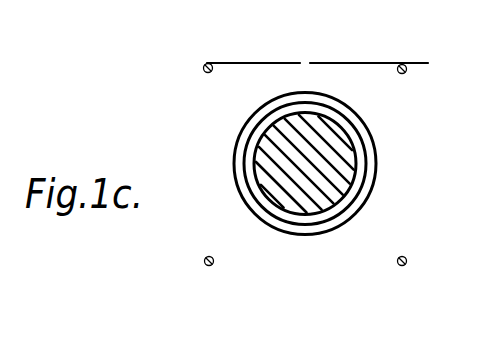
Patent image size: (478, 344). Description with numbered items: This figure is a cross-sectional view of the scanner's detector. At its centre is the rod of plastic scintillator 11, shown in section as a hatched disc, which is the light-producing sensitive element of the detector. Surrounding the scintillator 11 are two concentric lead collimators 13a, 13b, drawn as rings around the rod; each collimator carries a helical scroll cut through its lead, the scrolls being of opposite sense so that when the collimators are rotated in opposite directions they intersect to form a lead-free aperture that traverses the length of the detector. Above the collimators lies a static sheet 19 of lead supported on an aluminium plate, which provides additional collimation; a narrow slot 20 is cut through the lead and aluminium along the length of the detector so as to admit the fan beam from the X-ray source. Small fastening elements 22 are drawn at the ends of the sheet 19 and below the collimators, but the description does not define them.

The rod of plastic scintillator 11 is at (342, 173).
The concentric lead collimator 13a is at (253, 143).
The concentric lead collimator 13b is at (367, 120).
The static sheet 19 is at (418, 63).
The slot 20 is at (305, 60).
The screws 22 is at (211, 267).